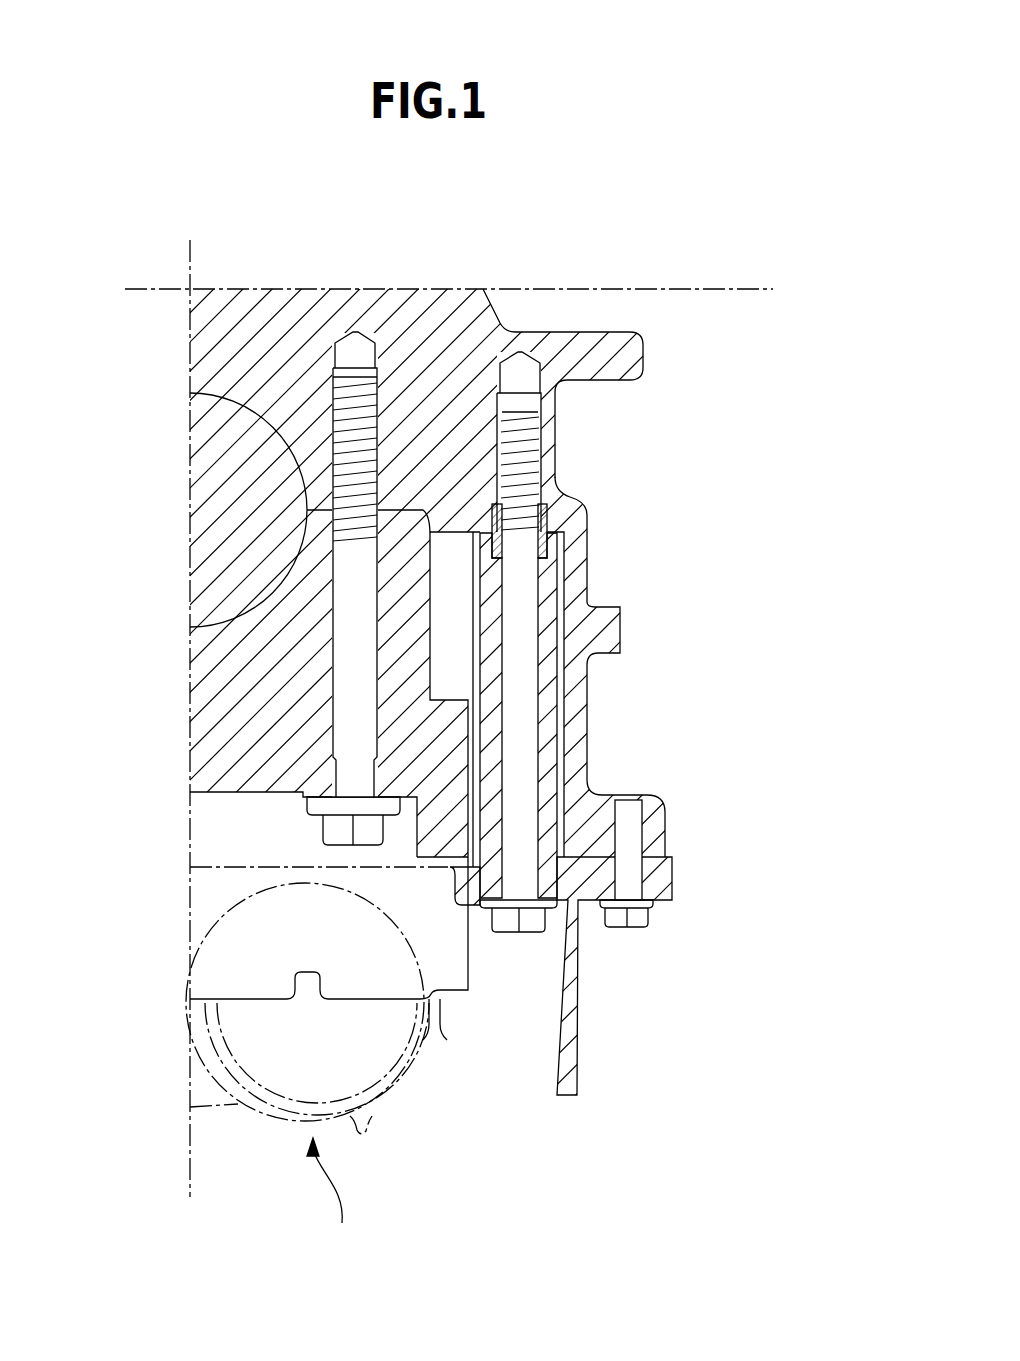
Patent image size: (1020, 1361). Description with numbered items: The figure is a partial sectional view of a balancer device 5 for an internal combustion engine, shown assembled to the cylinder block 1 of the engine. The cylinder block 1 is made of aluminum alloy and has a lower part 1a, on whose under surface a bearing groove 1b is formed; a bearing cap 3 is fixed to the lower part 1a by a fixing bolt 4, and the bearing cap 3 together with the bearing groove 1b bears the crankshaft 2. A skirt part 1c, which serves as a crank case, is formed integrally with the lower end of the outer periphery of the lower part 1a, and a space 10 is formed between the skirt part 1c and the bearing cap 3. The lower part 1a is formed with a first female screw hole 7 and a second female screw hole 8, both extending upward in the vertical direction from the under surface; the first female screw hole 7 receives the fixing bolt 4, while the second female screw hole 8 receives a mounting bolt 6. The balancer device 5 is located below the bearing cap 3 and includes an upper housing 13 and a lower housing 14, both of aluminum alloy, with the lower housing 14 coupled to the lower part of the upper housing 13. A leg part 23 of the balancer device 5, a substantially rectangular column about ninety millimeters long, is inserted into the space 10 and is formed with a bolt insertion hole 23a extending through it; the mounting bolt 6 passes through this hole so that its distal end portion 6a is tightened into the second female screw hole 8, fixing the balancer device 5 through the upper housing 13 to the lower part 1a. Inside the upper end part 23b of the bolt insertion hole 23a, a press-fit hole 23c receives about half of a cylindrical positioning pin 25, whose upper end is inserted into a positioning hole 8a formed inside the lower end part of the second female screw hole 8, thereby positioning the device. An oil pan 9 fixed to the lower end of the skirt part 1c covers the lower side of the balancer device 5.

The cylinder block 1 is at (200, 317).
The lower part 1a is at (418, 420).
The bearing groove 1b is at (245, 412).
The skirt part 1c is at (587, 733).
The crankshaft 2 is at (207, 493).
The bearing cap 3 is at (205, 722).
The fixing bolt 4 is at (345, 645).
The balancer device 5 is at (350, 1254).
The mounting bolt 6 is at (517, 663).
The distal end portion 6a is at (525, 465).
The first female screw hole 7 is at (340, 402).
The second female screw hole 8 is at (527, 438).
The positioning hole 8a is at (512, 505).
The oil pan 9 is at (577, 978).
The space 10 is at (562, 623).
The upper housing 13 is at (212, 900).
The lower housing 14 is at (202, 1087).
The leg part 23 is at (548, 703).
The bolt insertion hole 23a is at (540, 760).
The upper end part 23b is at (548, 576).
The press-fit hole 23c is at (527, 553).
The positioning pin 25 is at (548, 520).